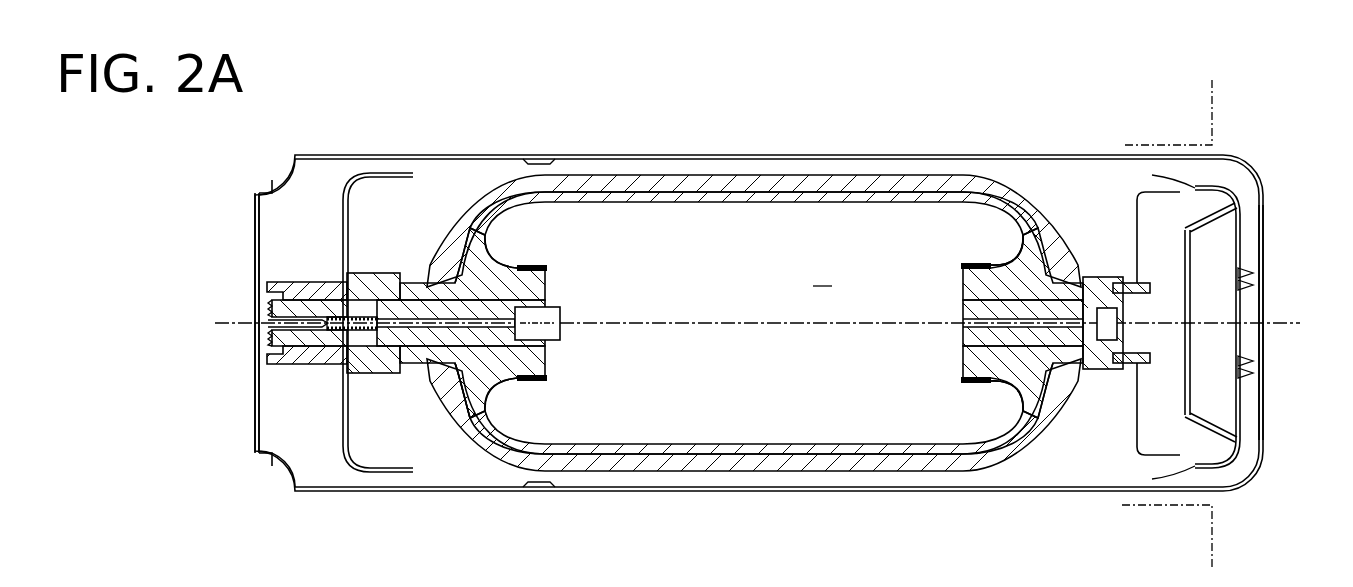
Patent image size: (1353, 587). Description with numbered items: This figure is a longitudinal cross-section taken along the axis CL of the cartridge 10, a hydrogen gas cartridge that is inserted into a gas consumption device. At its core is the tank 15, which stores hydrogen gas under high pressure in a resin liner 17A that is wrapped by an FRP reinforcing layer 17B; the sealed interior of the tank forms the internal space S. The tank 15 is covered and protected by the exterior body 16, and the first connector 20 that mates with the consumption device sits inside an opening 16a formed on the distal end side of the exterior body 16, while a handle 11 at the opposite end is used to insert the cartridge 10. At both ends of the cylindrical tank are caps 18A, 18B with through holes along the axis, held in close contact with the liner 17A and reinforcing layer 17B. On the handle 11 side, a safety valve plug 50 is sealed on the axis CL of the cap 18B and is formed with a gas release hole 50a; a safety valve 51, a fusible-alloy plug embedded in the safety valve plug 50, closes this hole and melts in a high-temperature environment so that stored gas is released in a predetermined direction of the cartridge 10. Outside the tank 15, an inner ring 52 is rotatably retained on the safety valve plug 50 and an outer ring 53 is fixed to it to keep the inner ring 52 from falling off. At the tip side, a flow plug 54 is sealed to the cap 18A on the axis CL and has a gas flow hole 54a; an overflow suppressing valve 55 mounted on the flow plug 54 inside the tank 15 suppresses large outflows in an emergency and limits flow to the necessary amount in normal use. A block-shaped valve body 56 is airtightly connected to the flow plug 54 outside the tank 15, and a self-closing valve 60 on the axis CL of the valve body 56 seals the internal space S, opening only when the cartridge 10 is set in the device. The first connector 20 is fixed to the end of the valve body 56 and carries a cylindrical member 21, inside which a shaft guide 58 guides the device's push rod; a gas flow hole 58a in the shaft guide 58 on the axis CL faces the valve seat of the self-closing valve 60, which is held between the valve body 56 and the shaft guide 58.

The cartridge 10 is at (759, 304).
The handle 11 is at (1270, 370).
The tank 15 is at (754, 368).
The exterior body 16 is at (888, 502).
The opening 16a is at (256, 292).
The liner 17A is at (597, 456).
The reinforcing layer 17B is at (645, 468).
The cap 18A is at (432, 368).
The cap 18B is at (1030, 382).
The first connector 20 is at (317, 267).
The cylindrical member 21 is at (320, 368).
The safety valve plug 50 is at (1006, 254).
The gas release hole 50a is at (968, 300).
The safety valve 51 is at (1120, 305).
The inner ring 52 is at (1141, 283).
The outer ring 53 is at (1165, 365).
The flow plug 54 is at (462, 335).
The gas flow hole 54a is at (427, 290).
The overflow suppressing valve 55 is at (562, 330).
The valve body 56 is at (368, 374).
The shaft guide 58 is at (296, 336).
The gas flow hole 58a is at (268, 323).
The self-closing valve 60 is at (352, 312).
The internal space S is at (823, 270).
The axis CL is at (780, 323).